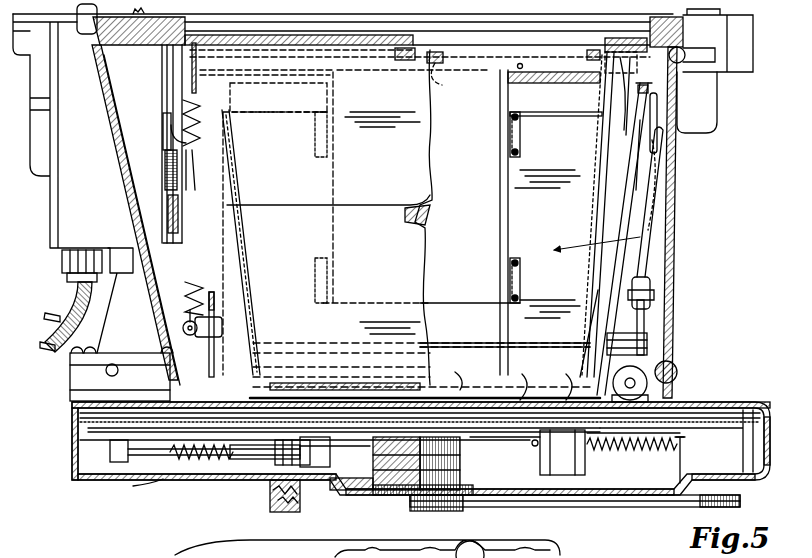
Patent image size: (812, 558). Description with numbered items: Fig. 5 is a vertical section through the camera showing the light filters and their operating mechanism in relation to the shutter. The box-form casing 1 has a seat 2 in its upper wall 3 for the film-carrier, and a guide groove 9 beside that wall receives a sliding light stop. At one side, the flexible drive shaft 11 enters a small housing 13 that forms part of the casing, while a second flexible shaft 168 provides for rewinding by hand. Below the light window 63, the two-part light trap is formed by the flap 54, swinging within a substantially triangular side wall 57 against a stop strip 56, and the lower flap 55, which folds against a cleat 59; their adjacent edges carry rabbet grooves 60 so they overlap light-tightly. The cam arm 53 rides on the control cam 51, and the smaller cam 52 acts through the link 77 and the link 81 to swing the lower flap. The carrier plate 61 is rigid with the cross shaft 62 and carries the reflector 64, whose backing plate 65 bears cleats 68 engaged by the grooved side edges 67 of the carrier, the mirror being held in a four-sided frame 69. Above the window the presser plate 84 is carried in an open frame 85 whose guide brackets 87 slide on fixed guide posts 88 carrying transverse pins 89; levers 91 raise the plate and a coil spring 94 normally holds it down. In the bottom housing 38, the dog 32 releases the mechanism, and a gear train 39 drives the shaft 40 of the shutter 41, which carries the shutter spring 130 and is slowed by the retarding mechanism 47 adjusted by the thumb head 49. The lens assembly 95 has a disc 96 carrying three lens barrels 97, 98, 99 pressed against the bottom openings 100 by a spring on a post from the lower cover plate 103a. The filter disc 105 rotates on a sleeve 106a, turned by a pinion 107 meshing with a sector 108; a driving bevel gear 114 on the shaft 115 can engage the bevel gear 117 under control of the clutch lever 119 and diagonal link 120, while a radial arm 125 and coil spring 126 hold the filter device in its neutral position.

The casing 1 is at (166, 318).
The seat 2 is at (180, 17).
The upper wall 3 is at (80, 14).
The guide groove 9 is at (240, 26).
The flexible drive shaft 11 is at (48, 315).
The small housing 13 is at (86, 178).
The dog 32 is at (312, 461).
The bottom housing 38 is at (72, 448).
The gear train 39 is at (158, 401).
The shutter shaft 40 is at (270, 493).
The shutter 41 is at (97, 428).
The retarding mechanism 47 is at (226, 478).
The thumb head 49 is at (133, 10).
The control cam 51 is at (167, 215).
The control cam 52 is at (180, 268).
The cam arm 53 is at (170, 88).
The flap 54 is at (400, 156).
The flap 55 is at (385, 289).
The stop strip 56 is at (211, 119).
The side wall 57 is at (609, 272).
The stop cleat 59 is at (596, 294).
The rabbet grooves 60 is at (420, 222).
The carrier plate 61 is at (478, 184).
The cross shaft 62 is at (437, 63).
The light window 63 is at (483, 42).
The reflector 64 is at (666, 219).
The backing plate 65 is at (492, 333).
The side edges 67 is at (320, 222).
The cleats 68 is at (318, 135).
The frame 69 is at (588, 324).
The link 77 is at (195, 143).
The link 81 is at (215, 345).
The presser plate 84 is at (383, 46).
The open frame 85 is at (225, 50).
The guide brackets 87 is at (644, 168).
The guide posts 88 is at (657, 125).
The transverse pins 89 is at (640, 145).
The levers 91 is at (641, 91).
The coil spring 94 is at (198, 143).
The lens assembly 95 is at (468, 498).
The disc 96 is at (742, 497).
The lens barrel 97 is at (443, 470).
The lens barrel 98 is at (625, 512).
The lens barrel 99 is at (668, 511).
The bottom openings 100 is at (556, 466).
The lower cover plate 103a is at (753, 478).
The filter disc 105 is at (712, 427).
The sleeve 106a is at (530, 444).
The pinion 107 is at (522, 398).
The sector 108 is at (567, 398).
The driving bevel gear 114 is at (650, 350).
The shaft 115 is at (456, 385).
The bevel gear 117 is at (688, 377).
The clutch lever 119 is at (642, 324).
The diagonal link 120 is at (653, 204).
The radial arm 125 is at (586, 446).
The coil spring 126 is at (674, 434).
The shutter spring 130 is at (272, 506).
The second flexible shaft 168 is at (46, 346).